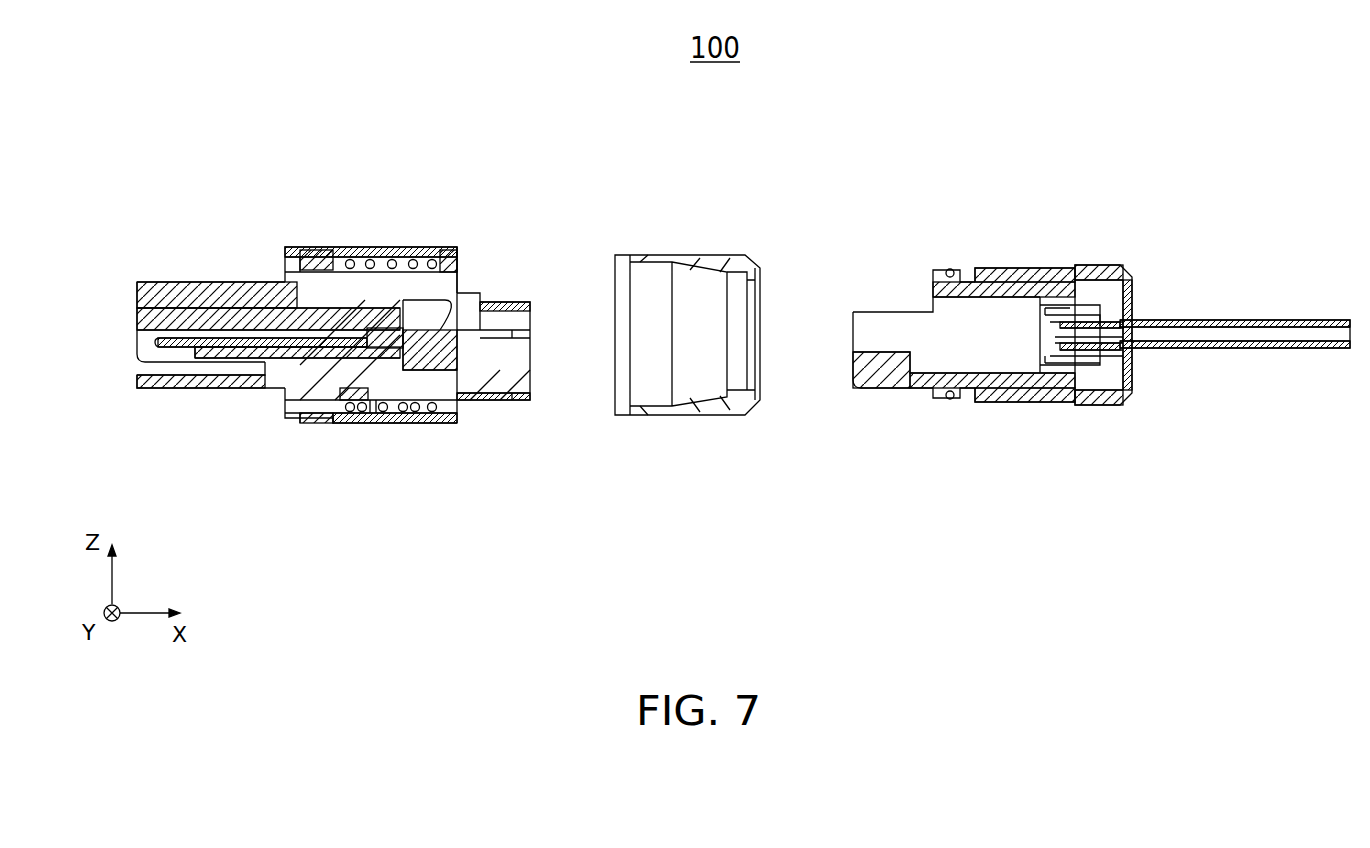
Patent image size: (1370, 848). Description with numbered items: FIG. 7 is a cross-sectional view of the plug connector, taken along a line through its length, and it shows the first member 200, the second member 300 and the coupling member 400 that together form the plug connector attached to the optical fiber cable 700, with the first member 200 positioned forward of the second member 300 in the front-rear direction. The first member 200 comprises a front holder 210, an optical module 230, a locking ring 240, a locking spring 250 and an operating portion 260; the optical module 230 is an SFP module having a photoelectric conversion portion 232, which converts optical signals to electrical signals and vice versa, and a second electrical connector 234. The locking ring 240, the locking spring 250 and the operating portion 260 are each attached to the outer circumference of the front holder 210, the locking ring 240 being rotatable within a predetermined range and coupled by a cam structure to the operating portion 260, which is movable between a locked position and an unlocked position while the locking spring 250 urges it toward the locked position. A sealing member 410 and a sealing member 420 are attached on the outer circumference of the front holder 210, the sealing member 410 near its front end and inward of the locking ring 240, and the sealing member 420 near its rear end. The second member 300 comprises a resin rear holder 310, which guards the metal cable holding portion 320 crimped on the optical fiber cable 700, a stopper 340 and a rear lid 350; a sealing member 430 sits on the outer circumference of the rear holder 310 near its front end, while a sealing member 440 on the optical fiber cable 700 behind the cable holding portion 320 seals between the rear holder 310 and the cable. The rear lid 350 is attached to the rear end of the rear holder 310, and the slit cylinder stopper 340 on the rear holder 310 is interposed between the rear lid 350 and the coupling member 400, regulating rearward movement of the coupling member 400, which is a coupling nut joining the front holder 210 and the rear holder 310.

The first member 200 is at (341, 200).
The front holder 210 is at (470, 404).
The optical module 230 is at (188, 318).
The photoelectric conversion portion 232 is at (380, 328).
The second electrical connector 234 is at (165, 348).
The locking ring 240 is at (292, 420).
The locking spring 250 is at (378, 422).
The operating portion 260 is at (342, 420).
The second member 300 is at (1006, 232).
The rear holder 310 is at (878, 388).
The cable holding portion 320 is at (1070, 378).
The stopper 340 is at (1056, 266).
The rear lid 350 is at (1113, 406).
The coupling member 400 is at (680, 255).
The sealing member 410 is at (313, 280).
The sealing member 420 is at (435, 260).
The sealing member 430 is at (950, 268).
The sealing member 440 is at (1122, 270).
The optical fiber cable 700 is at (1210, 350).